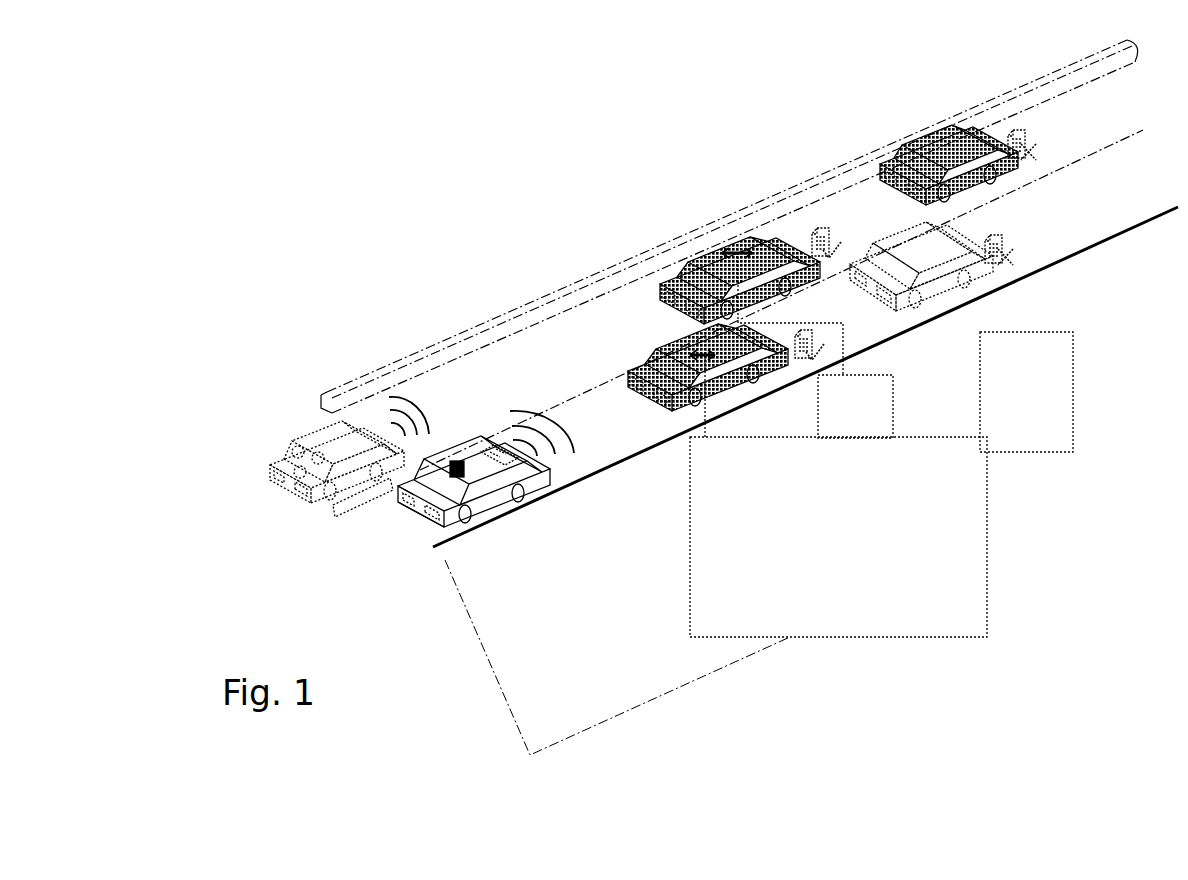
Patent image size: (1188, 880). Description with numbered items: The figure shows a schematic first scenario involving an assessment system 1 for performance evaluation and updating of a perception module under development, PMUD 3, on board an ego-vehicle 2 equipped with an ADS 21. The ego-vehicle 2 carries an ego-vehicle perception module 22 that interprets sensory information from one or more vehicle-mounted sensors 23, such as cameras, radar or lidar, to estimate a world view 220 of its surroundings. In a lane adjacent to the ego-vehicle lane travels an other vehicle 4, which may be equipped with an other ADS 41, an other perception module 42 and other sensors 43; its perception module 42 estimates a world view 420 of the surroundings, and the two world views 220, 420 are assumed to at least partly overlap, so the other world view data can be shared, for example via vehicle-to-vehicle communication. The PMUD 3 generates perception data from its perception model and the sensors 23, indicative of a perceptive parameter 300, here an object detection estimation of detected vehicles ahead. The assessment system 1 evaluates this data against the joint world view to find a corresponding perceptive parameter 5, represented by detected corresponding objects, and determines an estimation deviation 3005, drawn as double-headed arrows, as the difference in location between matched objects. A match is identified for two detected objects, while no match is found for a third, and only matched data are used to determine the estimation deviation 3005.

The assessment system 1 is at (464, 511).
The ego-vehicle 2 is at (418, 514).
The perception module under development (PMUD) 3 is at (497, 447).
The other vehicle 4 is at (316, 482).
The corresponding perceptive parameter 5 is at (945, 140).
The ADS 21 is at (437, 522).
The perception module 22 is at (473, 465).
The vehicle-mounted sensors 23 is at (402, 488).
The other ADS 41 is at (294, 452).
The other perception module 42 is at (316, 455).
The other sensors 43 is at (295, 472).
The world view 220 is at (577, 425).
The perceptive parameter 300 is at (667, 282).
The other world view 420 is at (430, 394).
The estimation deviation 3005 is at (881, 445).